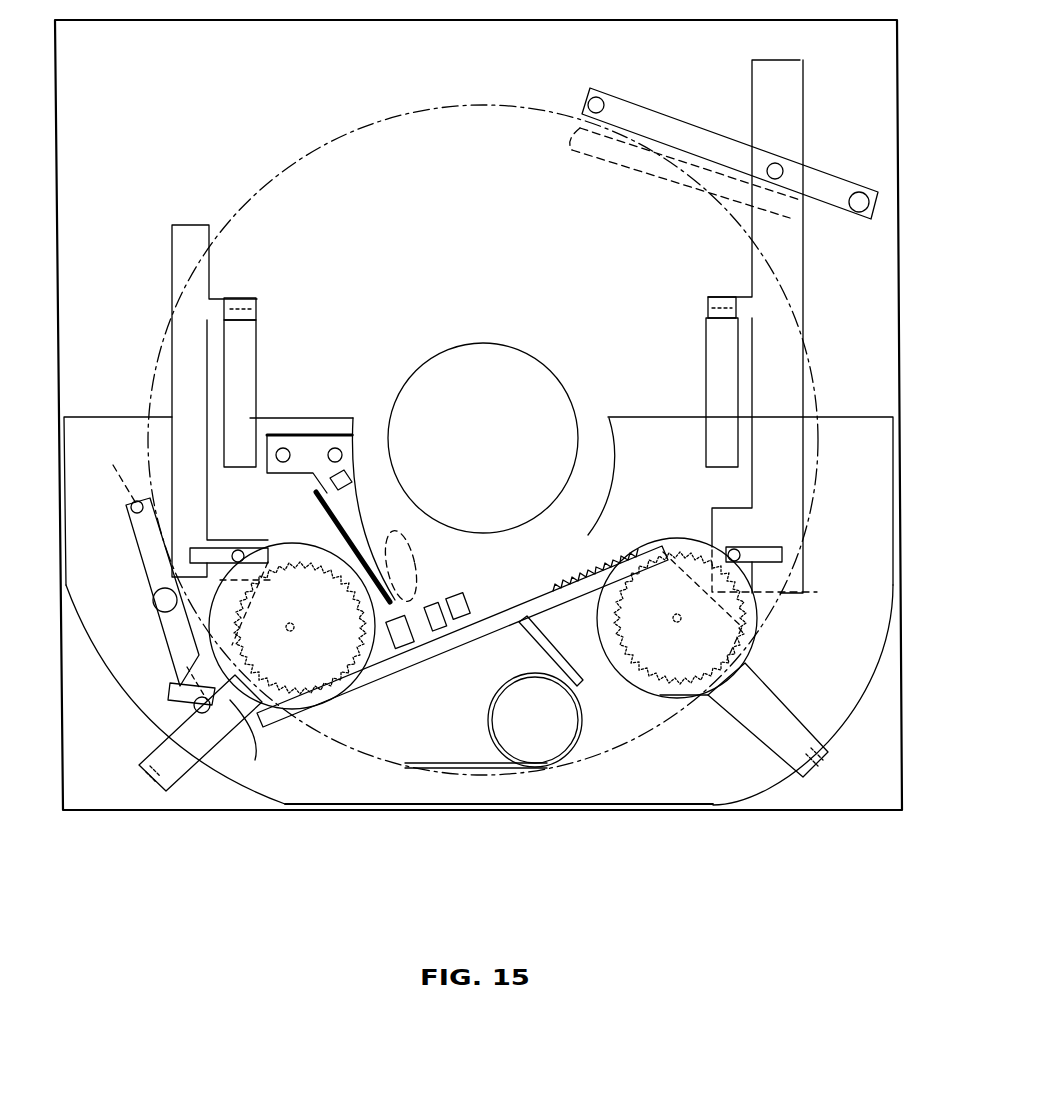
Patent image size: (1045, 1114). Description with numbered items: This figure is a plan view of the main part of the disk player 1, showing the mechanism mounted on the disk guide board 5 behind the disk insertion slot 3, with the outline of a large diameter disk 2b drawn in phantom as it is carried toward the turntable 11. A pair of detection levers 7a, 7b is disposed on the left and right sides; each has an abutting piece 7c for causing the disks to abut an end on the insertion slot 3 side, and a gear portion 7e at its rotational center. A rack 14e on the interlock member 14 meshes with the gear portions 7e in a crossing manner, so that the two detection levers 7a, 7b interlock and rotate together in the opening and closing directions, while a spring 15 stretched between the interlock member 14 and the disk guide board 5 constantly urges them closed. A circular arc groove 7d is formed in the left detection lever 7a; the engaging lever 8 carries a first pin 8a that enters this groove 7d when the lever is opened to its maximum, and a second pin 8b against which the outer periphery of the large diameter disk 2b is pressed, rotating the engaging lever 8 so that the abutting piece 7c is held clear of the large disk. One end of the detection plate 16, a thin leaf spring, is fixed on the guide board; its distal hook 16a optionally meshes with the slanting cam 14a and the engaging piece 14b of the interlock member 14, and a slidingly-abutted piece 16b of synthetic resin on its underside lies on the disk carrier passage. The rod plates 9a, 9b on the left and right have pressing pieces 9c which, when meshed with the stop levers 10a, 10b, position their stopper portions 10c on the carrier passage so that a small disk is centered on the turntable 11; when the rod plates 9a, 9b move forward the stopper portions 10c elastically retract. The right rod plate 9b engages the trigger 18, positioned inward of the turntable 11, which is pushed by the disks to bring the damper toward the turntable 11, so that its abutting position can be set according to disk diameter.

The disk player 1 is at (282, 68).
The large diameter disk 2b is at (418, 105).
The disk insertion slot 3 is at (518, 812).
The disk guide board 5 is at (482, 796).
The detection lever 7a is at (188, 780).
The detection lever 7b is at (762, 680).
The abutting piece 7c is at (145, 778).
The circular arc groove 7d is at (260, 700).
The gear portion 7e is at (292, 540).
The engaging lever 8 is at (142, 578).
The first pin 8a is at (176, 686).
The second pin 8b is at (107, 468).
The rod plate 9a is at (172, 240).
The rod plate 9b is at (790, 262).
The pressing piece 9c is at (258, 322).
The stop lever 10a is at (250, 386).
The stop lever 10b is at (704, 385).
The stopper portion 10c is at (262, 305).
The turntable 11 is at (485, 343).
The interlock member 14 is at (497, 602).
The slanting cam 14a is at (450, 627).
The engaging piece 14b is at (412, 657).
The rack 14e is at (592, 556).
The spring 15 is at (556, 750).
The detection plate 16 is at (360, 500).
The hook 16a is at (460, 596).
The slidingly-abutted piece 16b is at (410, 555).
The trigger 18 is at (616, 102).